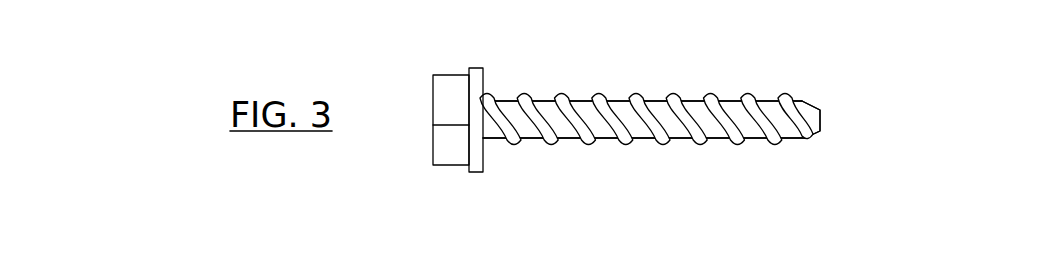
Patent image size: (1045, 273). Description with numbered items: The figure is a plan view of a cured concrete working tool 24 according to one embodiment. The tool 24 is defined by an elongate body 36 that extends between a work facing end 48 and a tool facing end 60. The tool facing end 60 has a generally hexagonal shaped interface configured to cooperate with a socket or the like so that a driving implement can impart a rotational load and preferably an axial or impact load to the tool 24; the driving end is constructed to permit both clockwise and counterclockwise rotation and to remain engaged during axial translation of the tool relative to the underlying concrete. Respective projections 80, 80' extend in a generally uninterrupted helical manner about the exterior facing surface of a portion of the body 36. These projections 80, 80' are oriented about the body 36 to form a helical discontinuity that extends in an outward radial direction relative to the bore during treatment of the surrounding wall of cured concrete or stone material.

The cured concrete working tool 24 is at (882, 110).
The elongate body 36 is at (571, 140).
The work facing end 48 is at (818, 73).
The tool facing end 60 is at (433, 185).
The projection 80 is at (646, 88).
The projection 80' is at (649, 143).